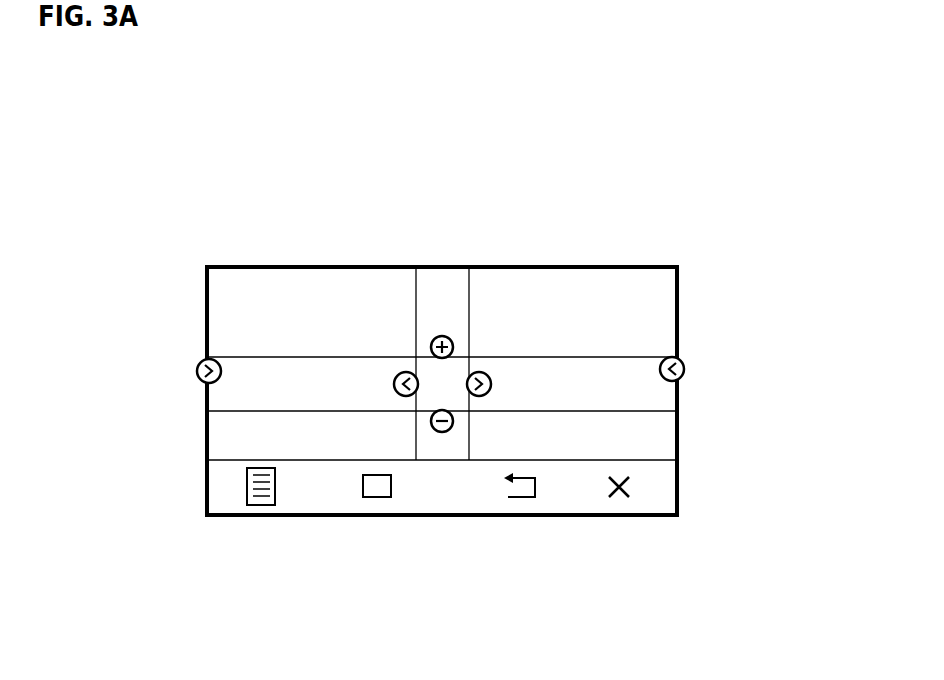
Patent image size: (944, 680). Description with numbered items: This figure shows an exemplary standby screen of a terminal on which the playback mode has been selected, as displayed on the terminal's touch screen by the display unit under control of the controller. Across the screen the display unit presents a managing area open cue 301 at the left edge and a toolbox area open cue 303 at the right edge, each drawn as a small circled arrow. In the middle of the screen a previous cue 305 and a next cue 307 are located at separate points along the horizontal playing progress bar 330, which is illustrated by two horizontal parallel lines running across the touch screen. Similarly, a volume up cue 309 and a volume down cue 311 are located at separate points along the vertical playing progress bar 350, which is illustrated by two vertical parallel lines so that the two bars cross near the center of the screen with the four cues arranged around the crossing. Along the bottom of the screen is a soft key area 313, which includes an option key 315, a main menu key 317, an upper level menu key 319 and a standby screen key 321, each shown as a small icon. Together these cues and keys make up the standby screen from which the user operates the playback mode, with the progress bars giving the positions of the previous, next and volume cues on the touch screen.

The managing area open cue 301 is at (197, 372).
The toolbox area open cue 303 is at (684, 371).
The previous cue 305 is at (394, 383).
The next cue 307 is at (491, 383).
The volume up cue 309 is at (453, 345).
The volume down cue 311 is at (440, 432).
The soft key area 313 is at (667, 487).
The option key 315 is at (262, 505).
The main menu key 317 is at (377, 497).
The upper level menu key 319 is at (520, 497).
The standby screen key 321 is at (621, 497).
The horizontal playing progress bar 330 is at (665, 397).
The vertical playing progress bar 350 is at (422, 300).